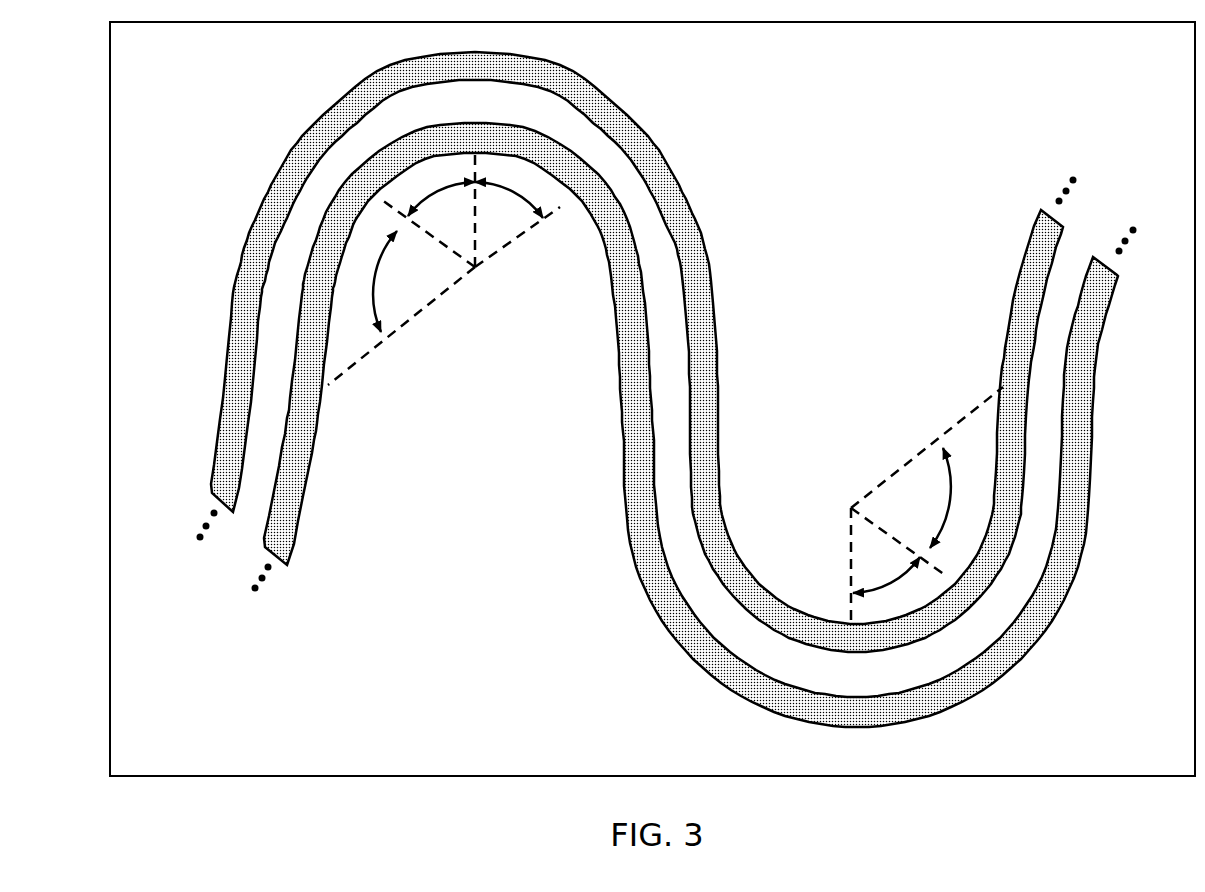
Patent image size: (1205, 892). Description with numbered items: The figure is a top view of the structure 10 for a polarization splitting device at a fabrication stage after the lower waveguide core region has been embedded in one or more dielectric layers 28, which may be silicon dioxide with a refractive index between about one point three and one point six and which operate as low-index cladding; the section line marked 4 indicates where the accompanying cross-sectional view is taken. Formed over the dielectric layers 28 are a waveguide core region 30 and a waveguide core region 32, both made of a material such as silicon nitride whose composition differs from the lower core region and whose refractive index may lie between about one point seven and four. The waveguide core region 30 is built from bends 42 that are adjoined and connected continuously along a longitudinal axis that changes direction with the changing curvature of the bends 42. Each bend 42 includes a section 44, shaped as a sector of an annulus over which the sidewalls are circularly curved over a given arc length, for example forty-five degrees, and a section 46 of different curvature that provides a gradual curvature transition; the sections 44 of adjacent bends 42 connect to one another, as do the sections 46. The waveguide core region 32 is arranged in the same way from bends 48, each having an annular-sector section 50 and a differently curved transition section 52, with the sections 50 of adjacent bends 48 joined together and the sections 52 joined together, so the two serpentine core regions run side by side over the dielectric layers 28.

The structure 10 is at (278, 97).
The one or more dielectric layers 28 is at (1082, 727).
The waveguide core region 30 is at (610, 480).
The waveguide core region 32 is at (665, 133).
The bends 42 is at (380, 178).
The section 44 is at (437, 231).
The section 46 is at (399, 281).
The bends 48 is at (262, 262).
The section 50 is at (862, 563).
The section 52 is at (899, 510).
The section line 4- 4 is at (813, 578).